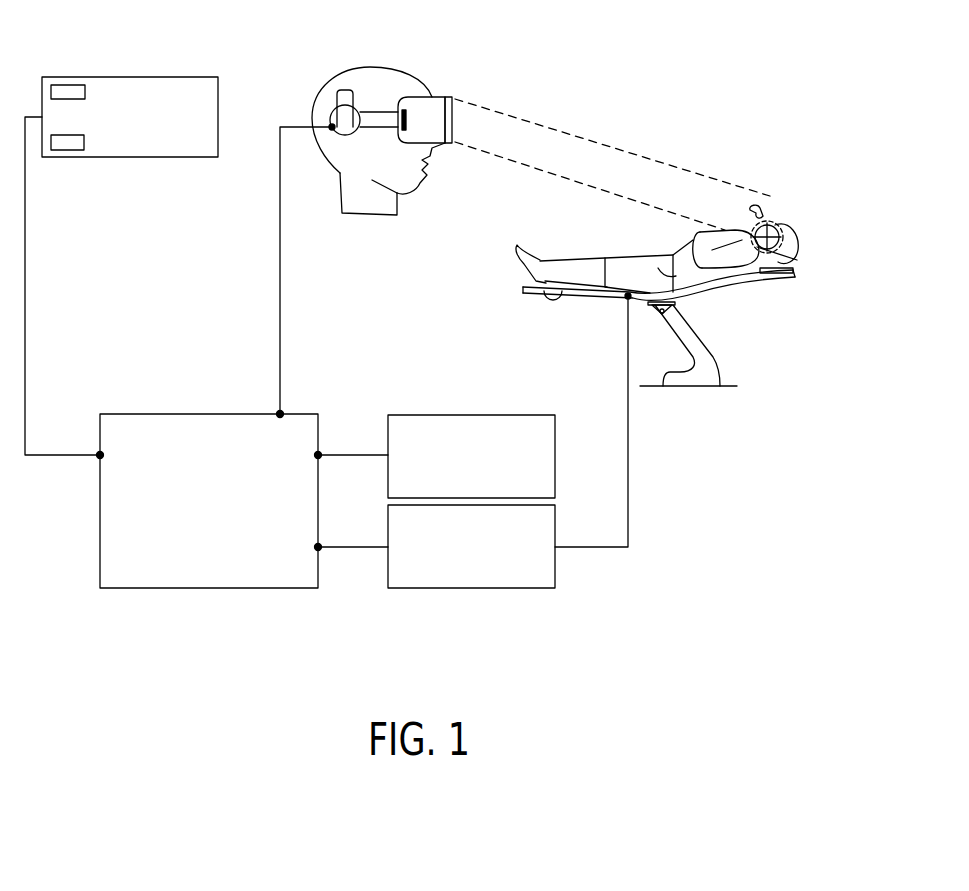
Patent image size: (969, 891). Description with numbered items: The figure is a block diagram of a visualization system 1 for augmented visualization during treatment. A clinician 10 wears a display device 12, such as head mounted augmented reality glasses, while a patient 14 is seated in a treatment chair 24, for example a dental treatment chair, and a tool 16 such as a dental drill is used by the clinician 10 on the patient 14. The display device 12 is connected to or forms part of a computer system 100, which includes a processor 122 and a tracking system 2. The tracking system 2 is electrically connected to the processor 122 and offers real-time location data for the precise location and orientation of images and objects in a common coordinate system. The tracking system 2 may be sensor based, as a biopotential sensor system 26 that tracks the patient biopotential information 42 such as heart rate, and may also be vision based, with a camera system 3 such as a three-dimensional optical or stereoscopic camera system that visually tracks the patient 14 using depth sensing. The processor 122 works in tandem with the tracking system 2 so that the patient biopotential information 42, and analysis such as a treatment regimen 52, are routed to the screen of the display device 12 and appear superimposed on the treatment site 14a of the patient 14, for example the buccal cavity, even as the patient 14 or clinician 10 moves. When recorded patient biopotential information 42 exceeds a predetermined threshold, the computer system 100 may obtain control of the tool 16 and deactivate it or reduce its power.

The visualization system 1 is at (710, 67).
The tracking system 2 is at (67, 152).
The camera system 3 is at (412, 414).
The clinician 10 is at (313, 99).
The display device 12 is at (437, 96).
The patient 14 is at (622, 257).
The treatment site 14a is at (783, 230).
The tool 16 is at (763, 211).
The treatment chair 24 is at (717, 368).
The biopotential sensor system 26 is at (437, 590).
The patient biopotential information 42 is at (812, 264).
The treatment regimen 52 is at (788, 252).
The computer system 100 is at (140, 76).
The processor 122 is at (63, 84).